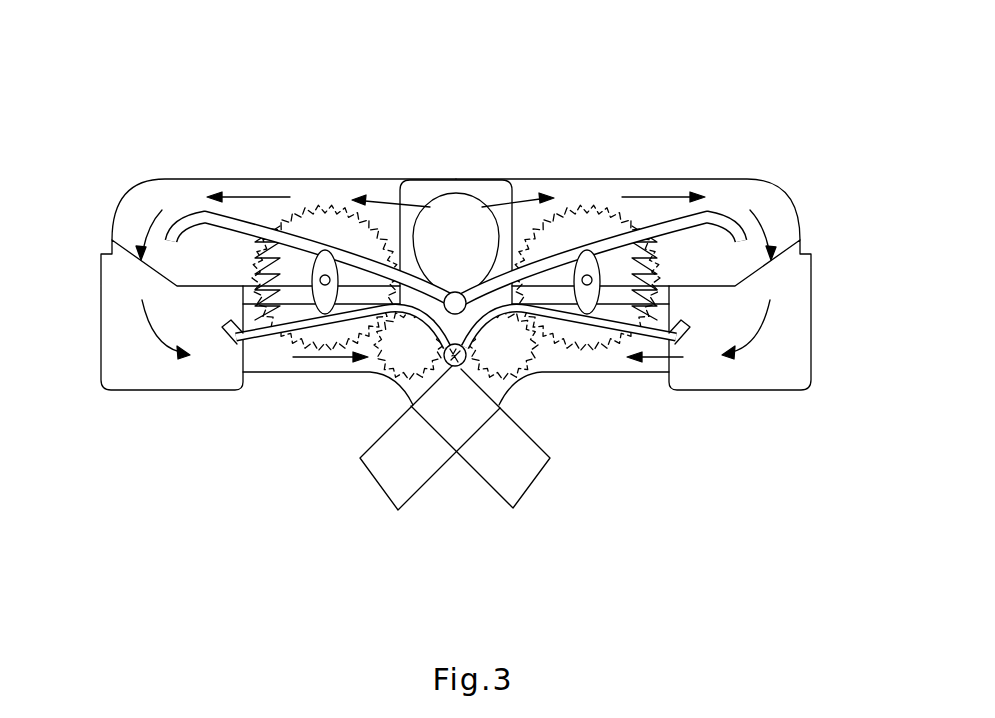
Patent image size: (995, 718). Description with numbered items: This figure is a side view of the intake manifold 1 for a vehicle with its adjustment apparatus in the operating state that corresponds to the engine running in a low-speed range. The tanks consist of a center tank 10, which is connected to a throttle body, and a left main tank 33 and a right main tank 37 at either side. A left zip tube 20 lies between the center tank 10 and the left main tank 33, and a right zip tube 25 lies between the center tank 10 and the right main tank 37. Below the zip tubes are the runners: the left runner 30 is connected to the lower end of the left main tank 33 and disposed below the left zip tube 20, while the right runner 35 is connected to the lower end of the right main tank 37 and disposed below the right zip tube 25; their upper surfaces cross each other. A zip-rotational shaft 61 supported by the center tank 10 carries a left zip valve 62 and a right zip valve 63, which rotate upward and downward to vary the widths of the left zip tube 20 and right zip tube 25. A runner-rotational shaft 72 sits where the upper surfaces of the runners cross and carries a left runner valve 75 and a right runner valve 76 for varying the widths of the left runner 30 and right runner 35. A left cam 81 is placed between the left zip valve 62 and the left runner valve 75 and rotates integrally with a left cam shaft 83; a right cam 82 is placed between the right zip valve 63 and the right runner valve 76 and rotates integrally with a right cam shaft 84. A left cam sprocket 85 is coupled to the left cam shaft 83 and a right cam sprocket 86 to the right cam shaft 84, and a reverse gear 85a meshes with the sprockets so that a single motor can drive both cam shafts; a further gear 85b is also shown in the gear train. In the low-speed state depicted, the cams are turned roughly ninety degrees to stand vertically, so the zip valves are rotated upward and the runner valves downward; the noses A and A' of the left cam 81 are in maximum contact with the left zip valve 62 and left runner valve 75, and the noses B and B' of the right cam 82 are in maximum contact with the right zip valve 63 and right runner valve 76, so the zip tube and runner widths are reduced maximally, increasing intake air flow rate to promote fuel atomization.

The intake manifold 1 is at (673, 84).
The center tank 10 is at (433, 190).
The left zip tube 20 is at (195, 190).
The right zip tube 25 is at (725, 190).
The left runner 30 is at (533, 473).
The left main tank 33 is at (100, 325).
The right runner 35 is at (385, 473).
The right main tank 37 is at (811, 322).
The zip-rotational shaft 61 is at (461, 294).
The left zip valve 62 is at (358, 240).
The right zip valve 63 is at (556, 245).
The runner-rotational shaft 72 is at (450, 367).
The left runner valve 75 is at (228, 345).
The right runner valve 76 is at (684, 345).
The left cam 81 is at (343, 325).
The right cam 82 is at (570, 325).
The left cam shaft 83 is at (330, 300).
The right cam shaft 84 is at (592, 300).
The left cam sprocket 85 is at (322, 208).
The reverse gear 85a is at (447, 356).
The right small gear 85b is at (488, 362).
The right cam sprocket 86 is at (570, 208).
The nose of left cam A is at (296, 167).
The nose of right cam B is at (616, 172).
The nose of left cam A' is at (325, 395).
The nose of right cam B' is at (589, 397).